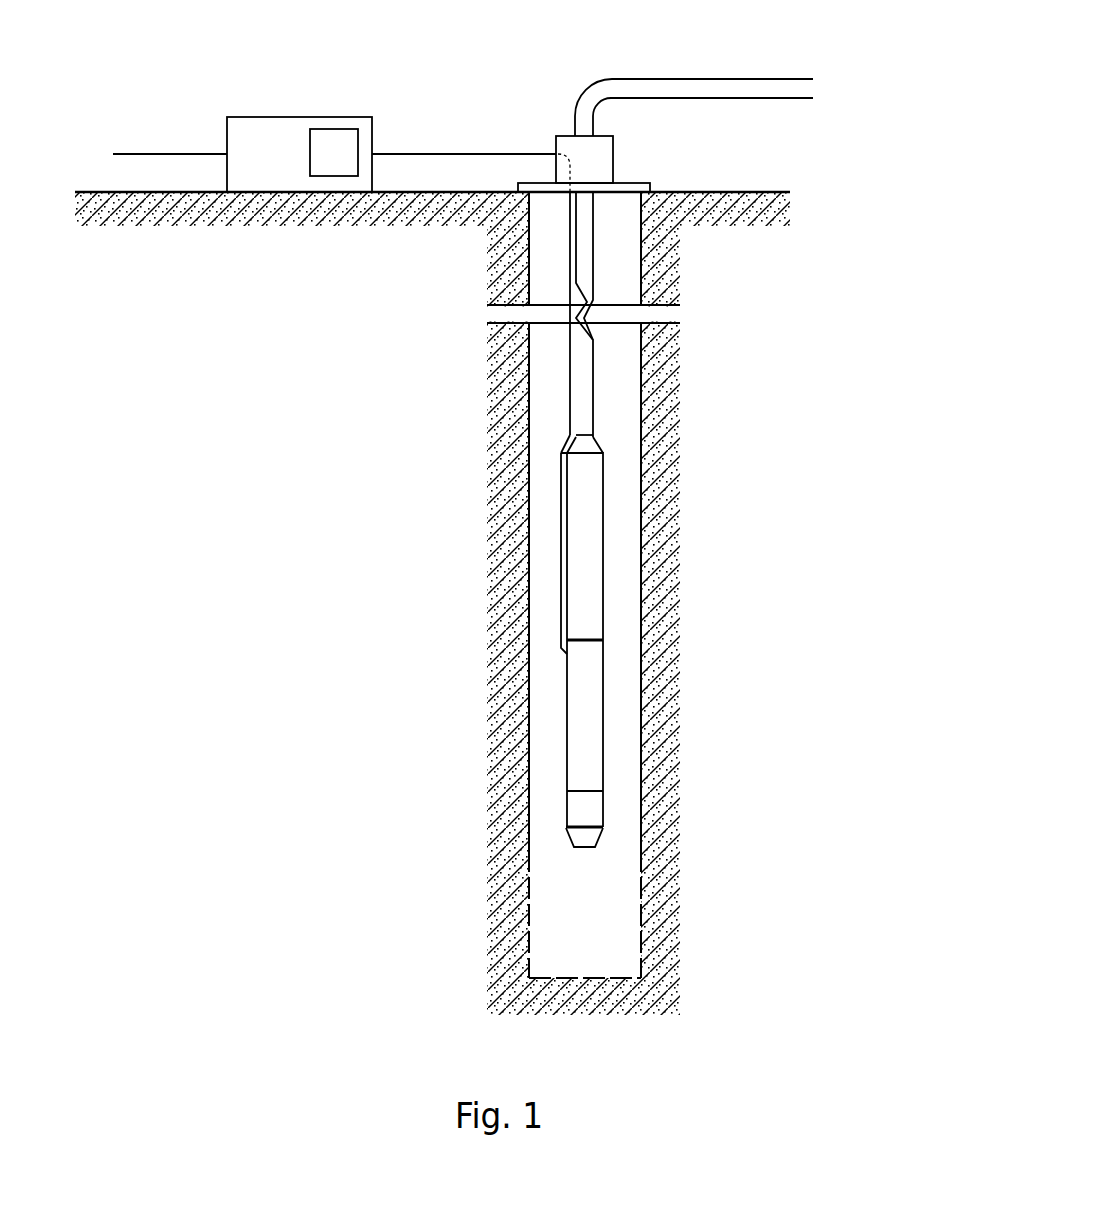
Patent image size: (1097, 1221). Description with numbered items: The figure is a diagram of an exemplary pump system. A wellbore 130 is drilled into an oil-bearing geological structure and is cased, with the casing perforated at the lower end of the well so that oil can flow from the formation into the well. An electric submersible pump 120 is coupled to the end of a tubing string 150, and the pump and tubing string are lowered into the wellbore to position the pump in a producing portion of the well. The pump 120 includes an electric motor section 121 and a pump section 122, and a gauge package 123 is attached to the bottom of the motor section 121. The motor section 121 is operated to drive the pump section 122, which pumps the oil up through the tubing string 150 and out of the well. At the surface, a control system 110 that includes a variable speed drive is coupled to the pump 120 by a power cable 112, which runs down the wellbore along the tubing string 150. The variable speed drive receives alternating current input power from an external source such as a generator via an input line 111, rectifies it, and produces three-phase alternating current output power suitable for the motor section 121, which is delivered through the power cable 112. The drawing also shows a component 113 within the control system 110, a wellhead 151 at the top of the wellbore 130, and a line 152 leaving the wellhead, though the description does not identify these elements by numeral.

The control system 110 is at (300, 117).
The input line 111 is at (161, 153).
The power cable 112 is at (462, 154).
The processor 113 is at (355, 129).
The electric submersible pump 120 is at (583, 628).
The electric motor section 121 is at (603, 770).
The pump section 122 is at (605, 473).
The gauge package 123 is at (645, 829).
The wellbore 130 is at (643, 553).
The tubing string 150 is at (593, 387).
The wellhead 151 is at (613, 152).
The flow line 152 is at (705, 79).